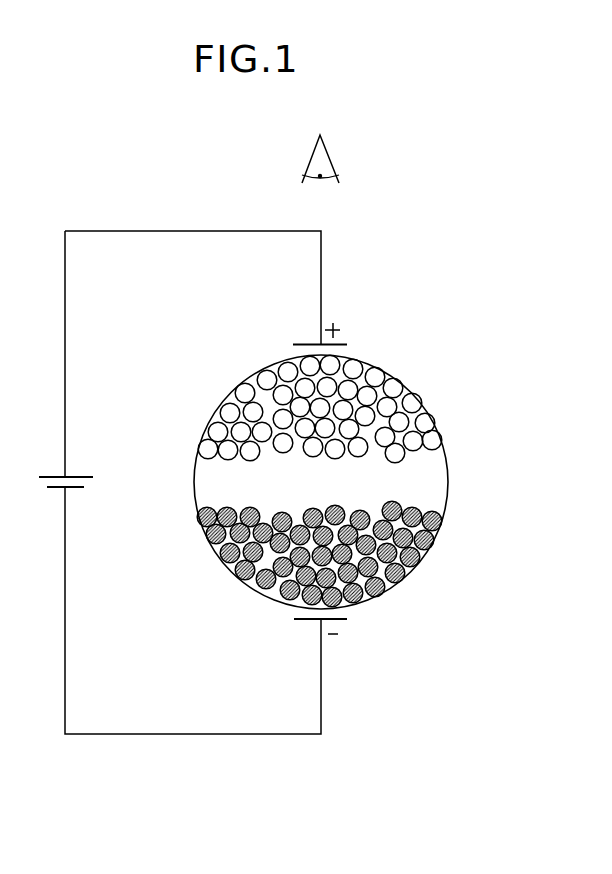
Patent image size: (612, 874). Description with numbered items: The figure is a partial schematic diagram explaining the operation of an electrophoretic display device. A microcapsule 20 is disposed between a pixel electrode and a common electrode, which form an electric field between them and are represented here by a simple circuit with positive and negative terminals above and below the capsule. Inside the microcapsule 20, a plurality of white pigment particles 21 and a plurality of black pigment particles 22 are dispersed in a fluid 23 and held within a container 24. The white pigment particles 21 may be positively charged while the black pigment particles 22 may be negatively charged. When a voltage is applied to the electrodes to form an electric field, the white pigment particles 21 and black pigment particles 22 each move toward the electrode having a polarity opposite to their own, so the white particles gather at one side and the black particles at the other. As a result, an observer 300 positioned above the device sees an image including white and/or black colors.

The observer 300 is at (338, 160).
The microcapsule 20 is at (421, 386).
The white pigment particles 21 is at (433, 445).
The black pigment particles 22 is at (442, 523).
The fluid 23 is at (443, 470).
The container 24 is at (448, 493).